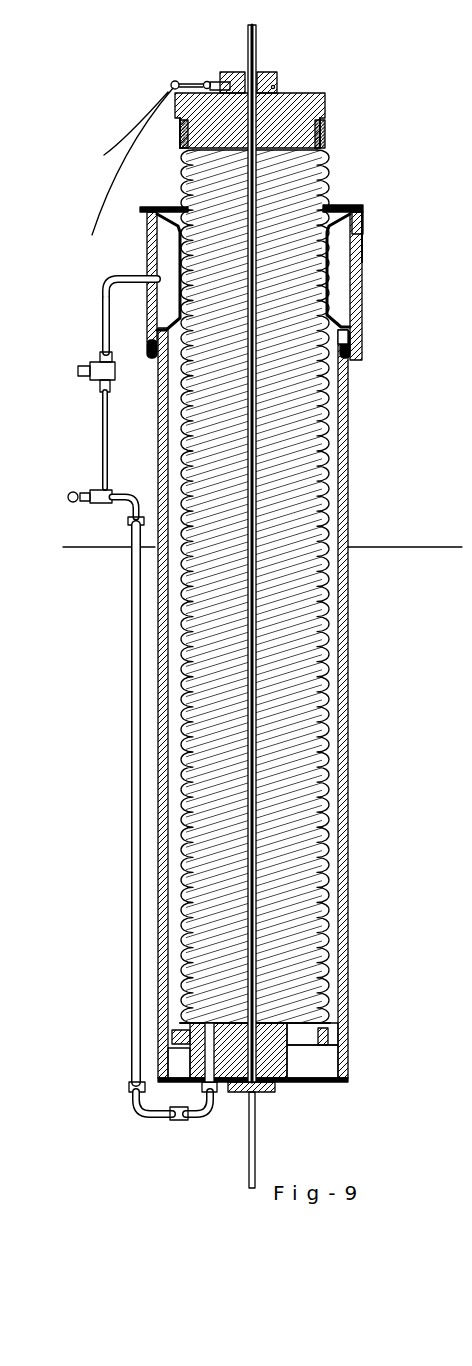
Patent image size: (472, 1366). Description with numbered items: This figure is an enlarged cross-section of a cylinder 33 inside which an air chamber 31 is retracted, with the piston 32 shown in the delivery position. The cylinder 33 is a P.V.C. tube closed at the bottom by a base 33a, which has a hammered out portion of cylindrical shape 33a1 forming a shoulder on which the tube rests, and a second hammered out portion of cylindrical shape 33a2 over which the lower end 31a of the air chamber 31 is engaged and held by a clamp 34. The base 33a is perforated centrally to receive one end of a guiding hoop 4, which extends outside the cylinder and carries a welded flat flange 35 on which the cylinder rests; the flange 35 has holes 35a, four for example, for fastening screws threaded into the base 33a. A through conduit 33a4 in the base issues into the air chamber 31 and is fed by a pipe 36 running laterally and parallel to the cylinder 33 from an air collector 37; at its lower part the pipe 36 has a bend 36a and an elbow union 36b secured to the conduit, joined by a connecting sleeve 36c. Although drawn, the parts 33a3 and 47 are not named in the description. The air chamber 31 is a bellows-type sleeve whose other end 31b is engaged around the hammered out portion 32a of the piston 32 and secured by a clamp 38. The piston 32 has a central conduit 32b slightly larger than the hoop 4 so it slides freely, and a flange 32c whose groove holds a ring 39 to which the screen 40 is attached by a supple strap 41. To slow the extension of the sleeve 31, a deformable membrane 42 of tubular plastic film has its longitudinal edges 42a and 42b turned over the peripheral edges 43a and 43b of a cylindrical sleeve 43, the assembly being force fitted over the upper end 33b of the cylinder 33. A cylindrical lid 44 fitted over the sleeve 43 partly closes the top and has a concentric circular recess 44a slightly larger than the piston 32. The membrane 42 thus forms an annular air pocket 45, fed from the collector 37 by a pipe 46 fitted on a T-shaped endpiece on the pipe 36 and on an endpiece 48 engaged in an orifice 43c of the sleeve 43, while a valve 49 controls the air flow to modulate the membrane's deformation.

The guiding hoop 4 is at (258, 857).
The air chamber 31 is at (328, 510).
The lower end of the air chamber 31a is at (168, 1025).
The other end of the air chamber 31b is at (322, 151).
The piston 32 is at (292, 100).
The hammered out portion of the piston 32a is at (324, 140).
The conduit of the piston 32b is at (264, 72).
The flange of the piston 32c is at (232, 72).
The cylinder 33 is at (349, 588).
The base 33a is at (312, 1080).
The hammered out portion of cylindrical shape 33a1 is at (306, 1064).
The second hammered out portion of cylindrical shape 33a2 is at (296, 1036).
The plug passage 33a3 is at (222, 1084).
The through conduit 33a4 is at (172, 1060).
The upper end of the cylinder 33b is at (346, 372).
The clamp 34 is at (322, 1044).
The flat flange 35 is at (266, 1090).
The holes 35a is at (258, 1092).
The pipe 36 is at (131, 712).
The bend 36a is at (134, 1104).
The elbow union 36b is at (206, 1100).
The connecting sleeve 36c is at (176, 1121).
The air collector 37 is at (86, 492).
The clamp 38 is at (322, 134).
The ring 39 is at (202, 82).
The screen 40 is at (125, 135).
The supple strap 41 is at (174, 80).
The deformable membrane 42 is at (331, 276).
The longitudinal edge of the membrane 42a is at (362, 242).
The longitudinal edge of the membrane 42b is at (356, 343).
The cylindrical sleeve 43 is at (147, 255).
The upper peripheral edge of the sleeve 43a is at (149, 205).
The lower peripheral edge of the sleeve 43b is at (150, 360).
The orifice 43c is at (152, 290).
The cylindrical lid 44 is at (357, 209).
The concentric circular recess 44a is at (330, 205).
The annular air pocket 45 is at (336, 298).
The pipe 46 is at (102, 318).
The lower pipe 47 is at (105, 478).
The endpiece 48 is at (148, 273).
The valve 49 is at (100, 366).